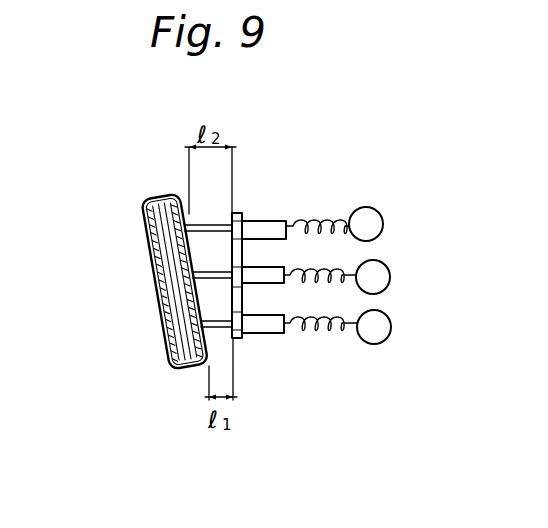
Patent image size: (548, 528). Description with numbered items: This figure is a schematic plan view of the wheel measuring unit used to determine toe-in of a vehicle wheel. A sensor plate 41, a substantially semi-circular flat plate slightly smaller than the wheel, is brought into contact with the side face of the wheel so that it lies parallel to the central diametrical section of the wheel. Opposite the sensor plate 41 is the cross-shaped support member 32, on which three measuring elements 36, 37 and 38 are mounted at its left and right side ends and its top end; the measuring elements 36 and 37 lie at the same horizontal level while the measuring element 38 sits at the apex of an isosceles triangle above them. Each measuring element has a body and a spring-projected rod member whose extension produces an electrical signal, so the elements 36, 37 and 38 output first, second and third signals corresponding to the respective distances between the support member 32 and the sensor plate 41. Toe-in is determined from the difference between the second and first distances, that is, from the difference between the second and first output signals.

The sensor plate 41 is at (195, 213).
The cross-shaped support member 32 is at (235, 212).
The measuring element 37 is at (284, 219).
The measuring element 38 is at (283, 283).
The measuring element 36 is at (280, 335).